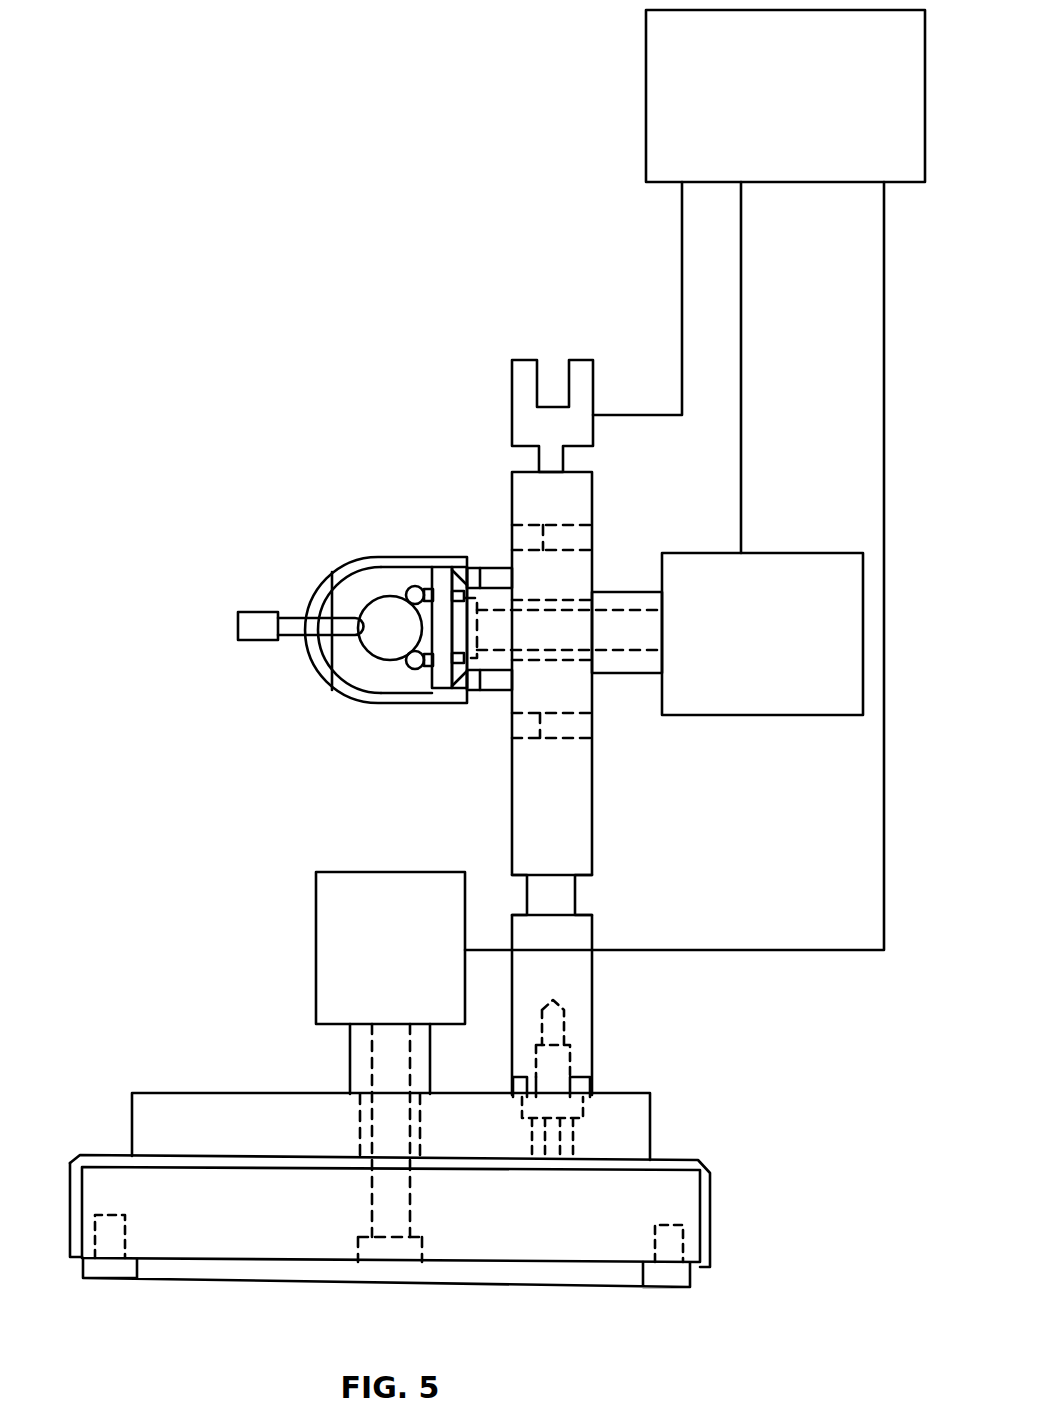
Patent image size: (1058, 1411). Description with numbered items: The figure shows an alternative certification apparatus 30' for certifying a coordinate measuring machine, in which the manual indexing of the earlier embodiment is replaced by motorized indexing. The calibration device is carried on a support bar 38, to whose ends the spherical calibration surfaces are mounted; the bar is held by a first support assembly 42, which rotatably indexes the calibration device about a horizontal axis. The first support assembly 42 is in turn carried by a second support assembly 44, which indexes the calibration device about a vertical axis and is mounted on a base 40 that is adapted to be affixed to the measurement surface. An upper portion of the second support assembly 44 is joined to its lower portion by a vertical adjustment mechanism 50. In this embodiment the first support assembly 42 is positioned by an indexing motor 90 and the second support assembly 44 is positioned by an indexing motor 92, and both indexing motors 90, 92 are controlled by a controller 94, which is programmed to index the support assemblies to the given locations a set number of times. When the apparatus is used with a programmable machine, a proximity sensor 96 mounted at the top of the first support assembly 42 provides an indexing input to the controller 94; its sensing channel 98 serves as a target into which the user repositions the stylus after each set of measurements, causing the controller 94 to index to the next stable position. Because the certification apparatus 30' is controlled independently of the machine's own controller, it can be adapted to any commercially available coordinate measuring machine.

The alternative certification apparatus 30' is at (408, 443).
The support bar 38 is at (375, 606).
The base 40 is at (710, 1200).
The first support assembly 42 is at (594, 505).
The second support assembly 44 is at (650, 1097).
The vertical adjustment mechanism 50 is at (578, 897).
The indexing motor 90 is at (700, 715).
The indexing motor 92 is at (316, 950).
The controller 94 is at (646, 112).
The proximity sensor 96 is at (515, 400).
The sensing channel 98 is at (563, 383).